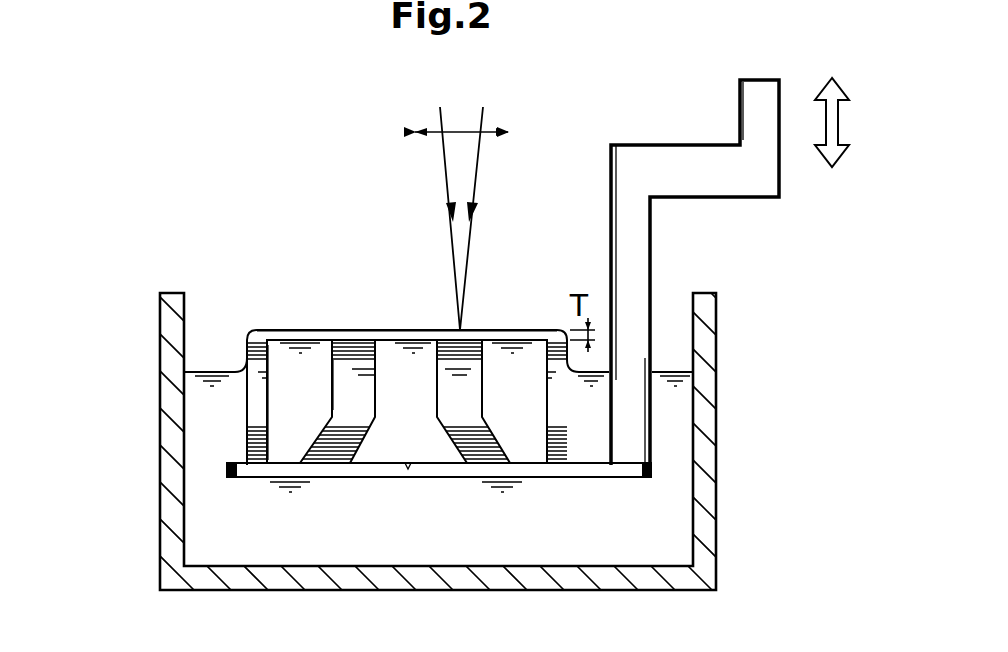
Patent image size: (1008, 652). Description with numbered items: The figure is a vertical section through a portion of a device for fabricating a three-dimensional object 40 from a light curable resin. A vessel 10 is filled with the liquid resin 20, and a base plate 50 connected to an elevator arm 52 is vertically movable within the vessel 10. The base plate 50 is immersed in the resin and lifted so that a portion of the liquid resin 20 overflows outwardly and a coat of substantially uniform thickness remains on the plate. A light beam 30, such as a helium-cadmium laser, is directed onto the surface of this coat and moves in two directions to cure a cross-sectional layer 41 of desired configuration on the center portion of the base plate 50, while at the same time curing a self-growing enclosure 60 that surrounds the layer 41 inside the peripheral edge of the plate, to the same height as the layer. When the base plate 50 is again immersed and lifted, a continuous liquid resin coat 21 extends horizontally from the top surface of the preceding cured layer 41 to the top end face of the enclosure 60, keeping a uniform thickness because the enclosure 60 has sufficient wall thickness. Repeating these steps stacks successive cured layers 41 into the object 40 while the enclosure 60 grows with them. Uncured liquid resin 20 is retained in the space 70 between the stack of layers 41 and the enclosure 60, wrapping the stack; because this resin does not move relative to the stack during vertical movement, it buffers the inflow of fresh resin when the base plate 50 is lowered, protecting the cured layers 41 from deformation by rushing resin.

The vessel 10 is at (160, 412).
The light curable resin 20 is at (268, 540).
The continuous liquid resin coat 21 is at (405, 330).
The light beam 30 is at (467, 170).
The three-dimensional object 40 is at (327, 400).
The cured cross-sectional layer 41 is at (337, 345).
The base plate 50 is at (583, 473).
The elevator arm 52 is at (678, 158).
The self-growing enclosure 60 is at (247, 347).
The space 70 is at (282, 358).